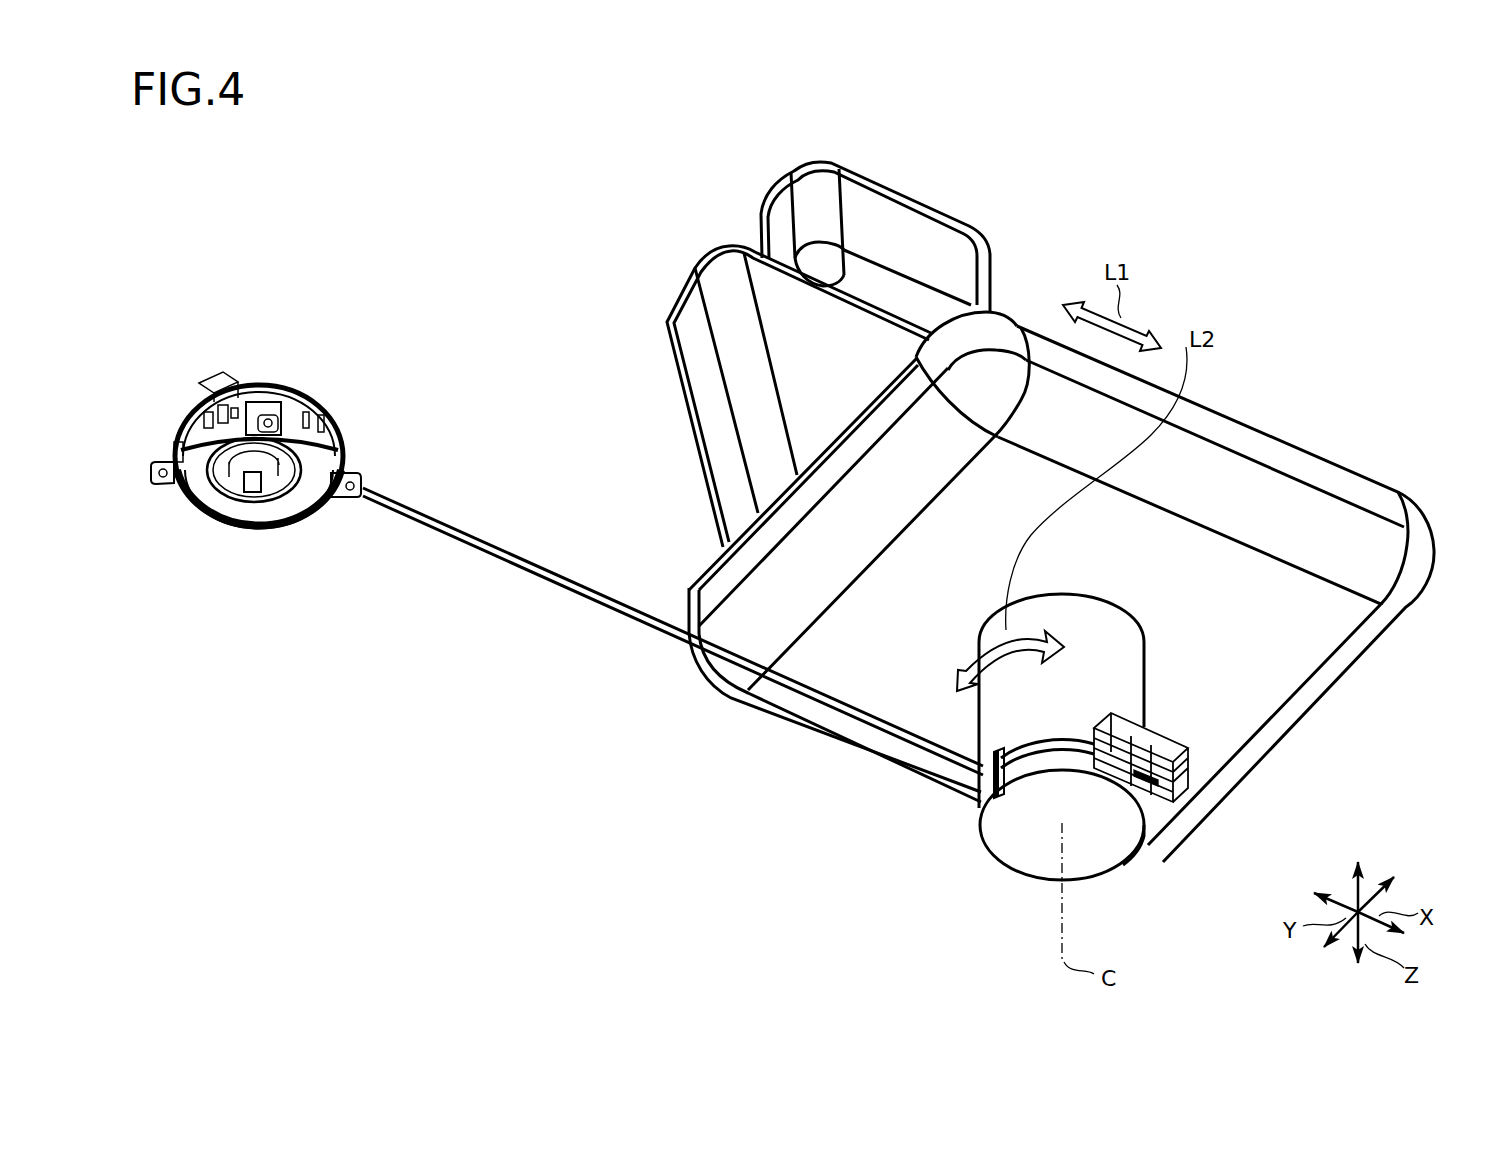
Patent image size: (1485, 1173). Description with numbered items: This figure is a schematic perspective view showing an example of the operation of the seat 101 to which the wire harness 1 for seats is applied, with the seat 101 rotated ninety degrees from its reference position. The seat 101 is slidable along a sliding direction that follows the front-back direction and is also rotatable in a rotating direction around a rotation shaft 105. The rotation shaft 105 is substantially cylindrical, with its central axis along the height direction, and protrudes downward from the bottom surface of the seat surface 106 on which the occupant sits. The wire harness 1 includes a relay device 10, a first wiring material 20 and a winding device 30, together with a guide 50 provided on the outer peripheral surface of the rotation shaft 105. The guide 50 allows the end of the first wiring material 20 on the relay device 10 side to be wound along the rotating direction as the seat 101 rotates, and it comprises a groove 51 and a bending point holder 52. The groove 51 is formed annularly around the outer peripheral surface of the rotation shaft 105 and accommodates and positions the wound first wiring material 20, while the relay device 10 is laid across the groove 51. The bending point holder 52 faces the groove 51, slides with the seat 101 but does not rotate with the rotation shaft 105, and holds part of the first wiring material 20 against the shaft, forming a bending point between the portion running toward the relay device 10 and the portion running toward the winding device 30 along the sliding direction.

The wire harness for seats 1 is at (637, 792).
The relay device 10 is at (1154, 808).
The first wiring material 20 is at (535, 592).
The winding device 30 is at (240, 545).
The guide 50 is at (1085, 718).
The groove 51 is at (1018, 750).
The bending point holder 52 is at (998, 772).
The seat 101 is at (858, 133).
The rotation shaft 105 is at (1150, 715).
The seat surface 106 is at (1222, 468).